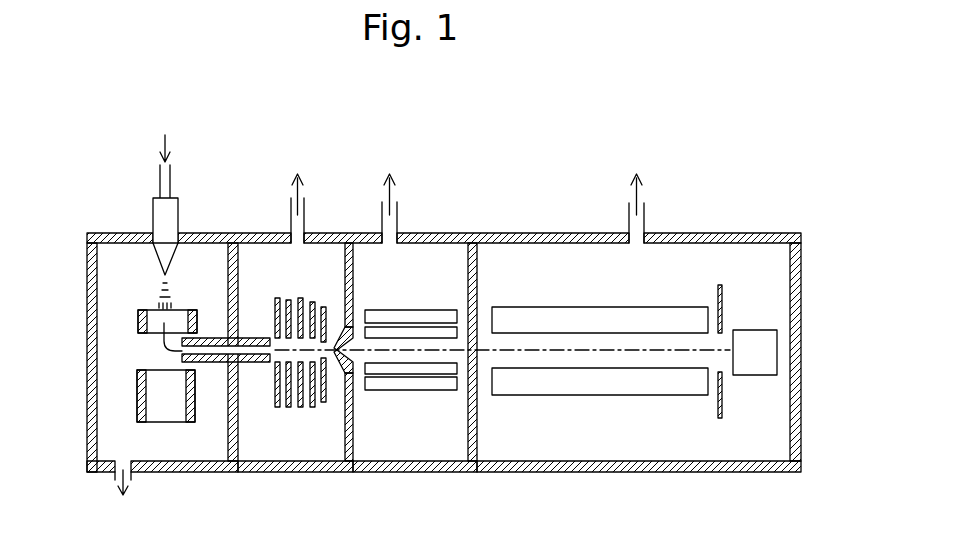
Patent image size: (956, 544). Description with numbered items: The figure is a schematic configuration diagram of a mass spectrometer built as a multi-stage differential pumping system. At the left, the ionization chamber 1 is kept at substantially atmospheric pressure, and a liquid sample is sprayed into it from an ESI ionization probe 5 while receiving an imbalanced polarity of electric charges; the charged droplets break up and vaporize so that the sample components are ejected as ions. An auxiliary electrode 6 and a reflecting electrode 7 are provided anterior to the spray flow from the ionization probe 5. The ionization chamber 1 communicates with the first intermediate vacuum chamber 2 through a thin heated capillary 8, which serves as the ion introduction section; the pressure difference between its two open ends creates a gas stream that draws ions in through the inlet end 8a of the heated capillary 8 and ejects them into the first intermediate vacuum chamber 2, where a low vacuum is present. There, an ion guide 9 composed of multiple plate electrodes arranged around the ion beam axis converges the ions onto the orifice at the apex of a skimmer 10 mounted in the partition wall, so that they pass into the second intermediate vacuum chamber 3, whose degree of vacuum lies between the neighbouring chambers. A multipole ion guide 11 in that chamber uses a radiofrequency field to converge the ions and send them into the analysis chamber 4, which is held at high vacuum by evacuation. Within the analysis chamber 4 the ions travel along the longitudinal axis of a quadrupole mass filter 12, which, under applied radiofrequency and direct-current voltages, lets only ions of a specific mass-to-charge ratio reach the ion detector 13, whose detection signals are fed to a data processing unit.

The ionization chamber 1 is at (206, 452).
The first intermediate vacuum chamber 2 is at (320, 452).
The second intermediate vacuum chamber 3 is at (434, 452).
The analysis chamber 4 is at (650, 452).
The ESI ionization probe 5 is at (153, 213).
The auxiliary electrode 6 is at (138, 322).
The reflecting electrode 7 is at (137, 380).
The heated capillary 8 is at (207, 338).
The inlet end of desolvation tube 8a is at (160, 352).
The ion guide 9 is at (302, 292).
The skimmer 10 is at (337, 354).
The multipole ion guide 11 is at (425, 306).
The quadrupole mass filter 12 is at (556, 306).
The ion detector 13 is at (778, 345).